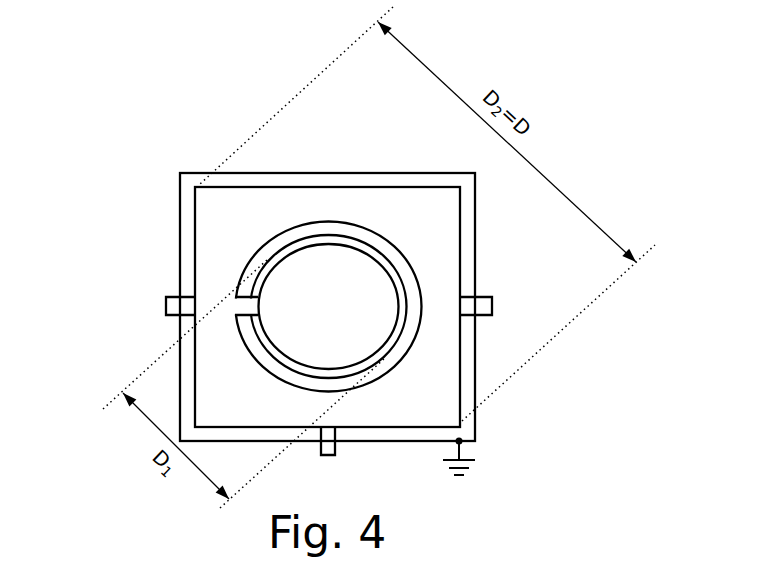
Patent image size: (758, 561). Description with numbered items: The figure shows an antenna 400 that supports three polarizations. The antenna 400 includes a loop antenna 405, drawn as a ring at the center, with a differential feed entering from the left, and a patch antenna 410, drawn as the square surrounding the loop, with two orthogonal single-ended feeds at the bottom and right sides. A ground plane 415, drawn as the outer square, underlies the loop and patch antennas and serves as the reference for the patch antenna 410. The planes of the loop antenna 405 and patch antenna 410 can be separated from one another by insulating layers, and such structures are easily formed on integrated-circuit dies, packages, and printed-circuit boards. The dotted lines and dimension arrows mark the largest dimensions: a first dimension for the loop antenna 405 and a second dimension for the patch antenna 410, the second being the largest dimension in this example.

The antenna 400 is at (152, 114).
The loop antenna 405 is at (276, 349).
The patch antenna 410 is at (438, 226).
The ground plane 415 is at (420, 173).